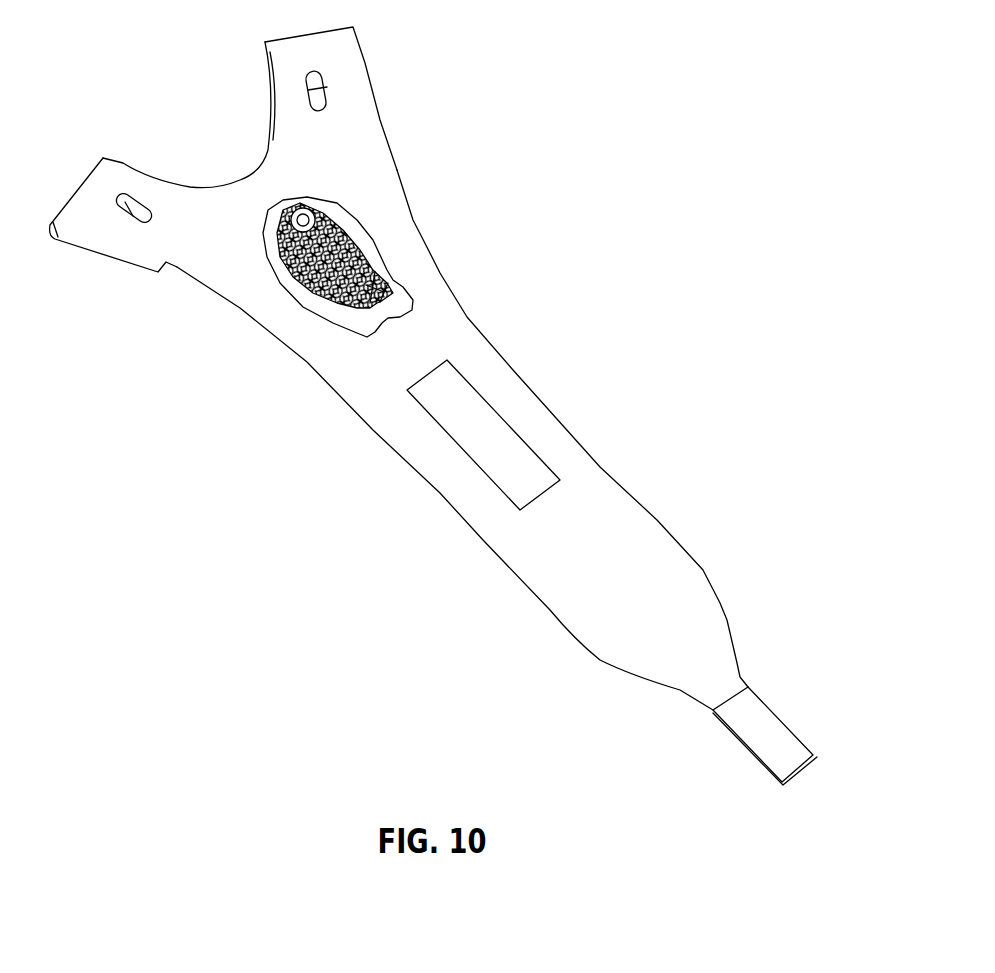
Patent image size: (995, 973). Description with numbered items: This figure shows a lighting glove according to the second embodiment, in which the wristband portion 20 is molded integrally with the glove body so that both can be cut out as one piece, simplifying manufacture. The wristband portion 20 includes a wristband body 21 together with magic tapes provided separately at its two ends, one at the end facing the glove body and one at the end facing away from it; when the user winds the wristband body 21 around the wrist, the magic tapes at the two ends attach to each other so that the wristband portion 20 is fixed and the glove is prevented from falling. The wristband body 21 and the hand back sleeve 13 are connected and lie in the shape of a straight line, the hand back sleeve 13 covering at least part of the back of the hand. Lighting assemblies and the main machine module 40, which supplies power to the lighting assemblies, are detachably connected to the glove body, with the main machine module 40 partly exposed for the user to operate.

The hand back sleeve 13 is at (407, 178).
The wristband portion 20 is at (453, 403).
The wristband body 21 is at (543, 432).
The main machine module 40 is at (377, 260).